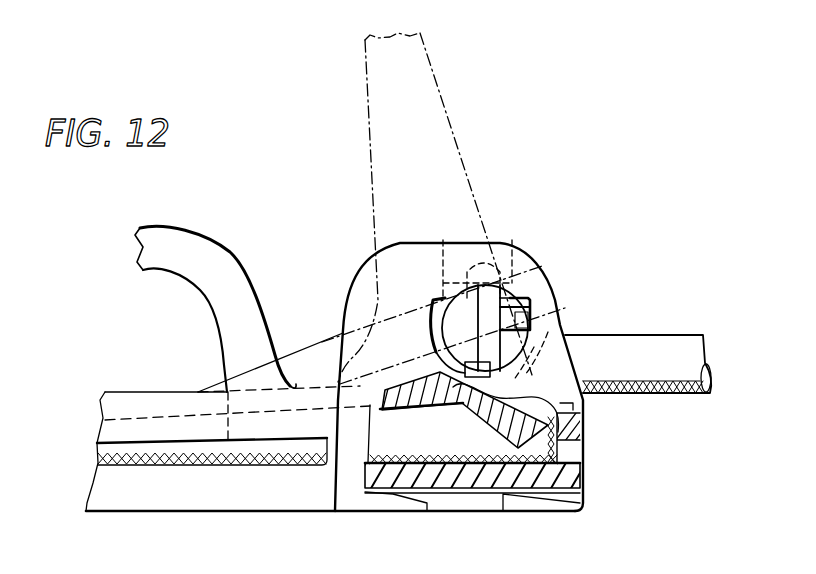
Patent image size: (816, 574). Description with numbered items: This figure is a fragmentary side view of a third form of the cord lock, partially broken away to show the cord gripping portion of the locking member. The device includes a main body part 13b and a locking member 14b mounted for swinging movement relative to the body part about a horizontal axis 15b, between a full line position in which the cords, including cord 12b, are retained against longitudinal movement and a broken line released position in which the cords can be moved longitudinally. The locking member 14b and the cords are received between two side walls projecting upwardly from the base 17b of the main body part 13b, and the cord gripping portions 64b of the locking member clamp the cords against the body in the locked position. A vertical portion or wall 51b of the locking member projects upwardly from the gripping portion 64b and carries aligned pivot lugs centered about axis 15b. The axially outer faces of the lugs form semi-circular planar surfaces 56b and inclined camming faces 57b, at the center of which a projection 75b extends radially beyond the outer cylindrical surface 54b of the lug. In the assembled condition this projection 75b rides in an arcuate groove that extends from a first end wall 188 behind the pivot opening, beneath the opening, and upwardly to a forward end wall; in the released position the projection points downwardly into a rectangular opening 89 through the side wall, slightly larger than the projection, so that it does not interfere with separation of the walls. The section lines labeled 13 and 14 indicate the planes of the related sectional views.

The cord 12b is at (678, 335).
The main body part 13b is at (334, 515).
The locking member 14b is at (301, 343).
The horizontal axis 15b is at (513, 288).
The base 17b is at (285, 493).
The vertical portion or wall 51b is at (470, 422).
The outer cylindrical surfaces of the pivot lugs 54b is at (530, 298).
The semi-circular planar surfaces 56b is at (460, 296).
The camming faces 57b is at (478, 322).
The cord gripping portions 64b is at (580, 434).
The projection 75b is at (530, 323).
The opening 89 is at (518, 388).
The first end wall of the groove 188 is at (432, 243).
The section line 13- 13 is at (422, 322).
The section line 14- 14 is at (480, 243).